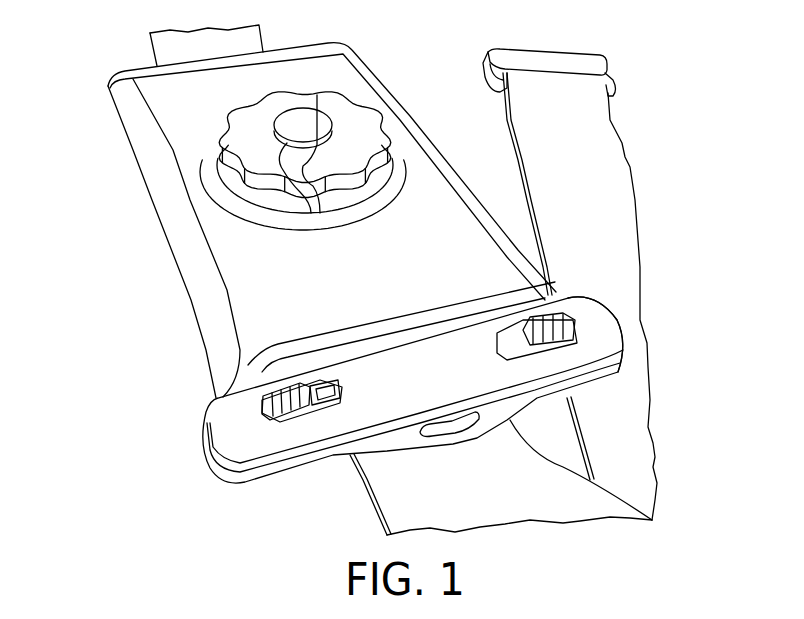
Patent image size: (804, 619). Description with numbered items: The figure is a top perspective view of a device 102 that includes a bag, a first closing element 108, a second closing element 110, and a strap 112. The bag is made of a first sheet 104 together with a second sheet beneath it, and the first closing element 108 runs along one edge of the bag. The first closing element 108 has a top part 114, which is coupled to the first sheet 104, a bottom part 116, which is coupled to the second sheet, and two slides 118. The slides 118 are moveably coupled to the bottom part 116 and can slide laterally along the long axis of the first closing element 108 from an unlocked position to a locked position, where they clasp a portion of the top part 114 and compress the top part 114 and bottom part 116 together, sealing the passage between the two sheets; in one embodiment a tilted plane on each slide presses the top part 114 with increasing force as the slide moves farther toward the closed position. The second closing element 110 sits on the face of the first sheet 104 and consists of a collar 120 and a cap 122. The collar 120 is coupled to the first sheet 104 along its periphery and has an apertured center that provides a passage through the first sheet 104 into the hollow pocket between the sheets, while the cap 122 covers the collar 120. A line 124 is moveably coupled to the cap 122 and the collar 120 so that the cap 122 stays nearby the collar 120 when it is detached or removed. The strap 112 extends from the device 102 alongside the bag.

The device 102 is at (138, 198).
The first sheet 104 is at (237, 277).
The first closing element 108 is at (227, 430).
The second closing element 110 is at (215, 147).
The strap 112 is at (603, 193).
The top part 114 is at (585, 324).
The bottom part 116 is at (527, 410).
The slides 118 is at (263, 397).
The collar 120 is at (400, 173).
The cap 122 is at (360, 123).
The line 124 is at (317, 95).